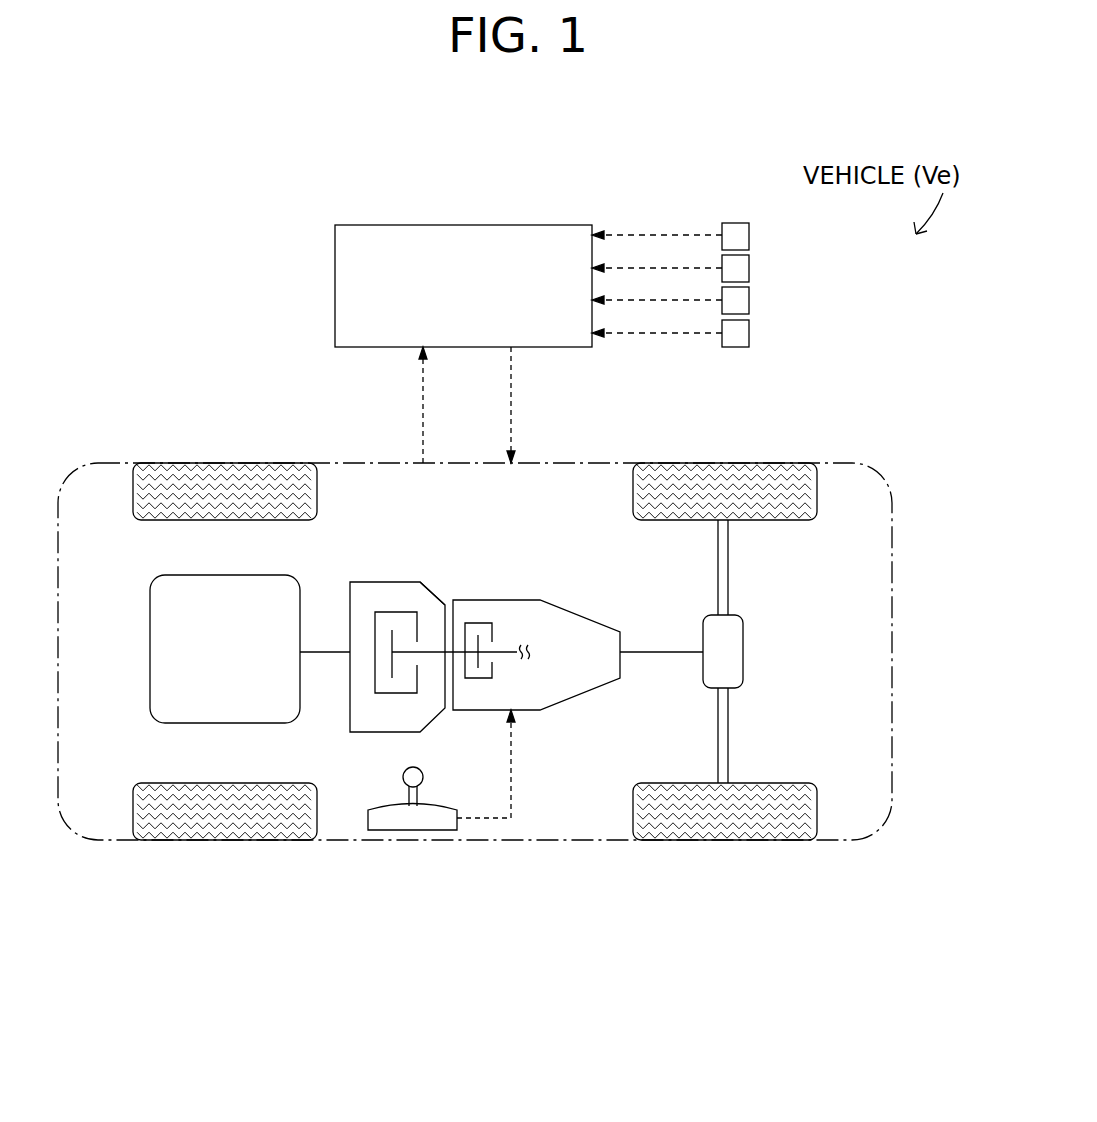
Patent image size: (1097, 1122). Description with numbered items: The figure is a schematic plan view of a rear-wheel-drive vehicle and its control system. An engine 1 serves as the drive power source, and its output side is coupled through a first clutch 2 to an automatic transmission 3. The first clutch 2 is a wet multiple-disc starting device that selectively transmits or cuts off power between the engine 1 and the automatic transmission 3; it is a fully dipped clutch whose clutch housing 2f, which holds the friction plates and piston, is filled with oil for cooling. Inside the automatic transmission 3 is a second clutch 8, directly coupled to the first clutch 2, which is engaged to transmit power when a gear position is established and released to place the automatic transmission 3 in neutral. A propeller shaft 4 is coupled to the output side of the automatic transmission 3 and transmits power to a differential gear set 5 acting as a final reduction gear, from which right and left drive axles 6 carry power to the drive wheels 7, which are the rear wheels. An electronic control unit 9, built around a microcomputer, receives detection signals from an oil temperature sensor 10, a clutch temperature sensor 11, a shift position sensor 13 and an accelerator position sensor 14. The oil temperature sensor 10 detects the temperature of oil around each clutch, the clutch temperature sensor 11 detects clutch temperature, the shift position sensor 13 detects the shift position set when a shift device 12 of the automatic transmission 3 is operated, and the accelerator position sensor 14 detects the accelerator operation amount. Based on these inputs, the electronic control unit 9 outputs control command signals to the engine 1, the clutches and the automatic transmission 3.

The engine 1 is at (150, 650).
The first clutch 2 is at (378, 578).
The clutch housing 2f is at (418, 580).
The automatic transmission 3 is at (567, 608).
The propeller shaft 4 is at (661, 658).
The differential gear set 5 is at (743, 652).
The drive axles 6 is at (728, 570).
The drive wheels 7 is at (725, 463).
The second clutch 8 is at (492, 612).
The electronic control unit 9 is at (335, 289).
The oil temperature sensor 10 is at (749, 237).
The clutch temperature sensor 11 is at (749, 269).
The shift device 12 is at (410, 830).
The shift position sensor 13 is at (749, 301).
The accelerator position sensor 14 is at (749, 334).